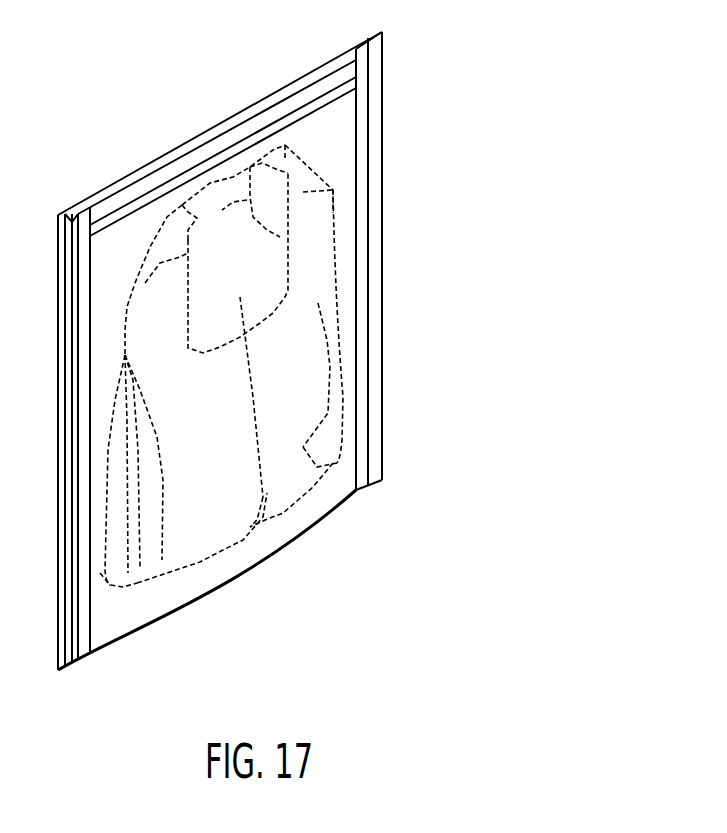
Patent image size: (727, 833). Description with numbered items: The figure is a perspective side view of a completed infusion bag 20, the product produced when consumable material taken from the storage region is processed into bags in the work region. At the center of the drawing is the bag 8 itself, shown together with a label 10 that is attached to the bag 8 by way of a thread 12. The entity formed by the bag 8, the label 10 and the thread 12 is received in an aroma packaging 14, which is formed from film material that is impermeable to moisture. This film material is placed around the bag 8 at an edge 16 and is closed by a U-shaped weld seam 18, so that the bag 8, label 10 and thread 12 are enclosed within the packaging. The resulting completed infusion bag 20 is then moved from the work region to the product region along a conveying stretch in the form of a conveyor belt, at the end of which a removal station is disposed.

The completed infusion bag 20 is at (193, 77).
The aroma packaging 14 is at (355, 118).
The U-shaped weld seam 18 is at (72, 217).
The edge 16 is at (216, 591).
The bag 8 is at (332, 354).
The label 10 is at (283, 223).
The thread 12 is at (263, 497).